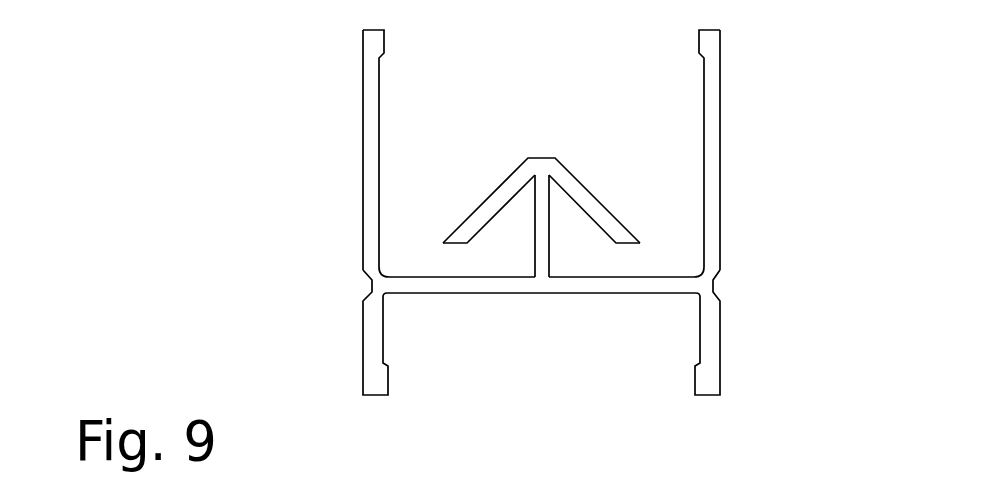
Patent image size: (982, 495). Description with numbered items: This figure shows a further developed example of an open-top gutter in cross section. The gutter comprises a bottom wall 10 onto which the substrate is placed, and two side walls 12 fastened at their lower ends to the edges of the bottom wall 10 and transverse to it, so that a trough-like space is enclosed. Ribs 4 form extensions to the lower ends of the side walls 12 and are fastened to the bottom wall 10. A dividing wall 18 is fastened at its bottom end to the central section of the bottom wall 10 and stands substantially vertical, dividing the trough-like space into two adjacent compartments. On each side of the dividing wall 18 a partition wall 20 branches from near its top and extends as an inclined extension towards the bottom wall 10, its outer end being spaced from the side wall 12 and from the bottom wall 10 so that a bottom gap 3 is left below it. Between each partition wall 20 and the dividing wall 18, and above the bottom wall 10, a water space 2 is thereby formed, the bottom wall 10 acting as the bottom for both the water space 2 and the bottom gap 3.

The water space 2 is at (497, 232).
The bottom gap 3 is at (450, 258).
The rib 4 is at (708, 347).
The bottom wall 10 is at (427, 285).
The side wall 12 is at (365, 113).
The dividing wall 18 is at (545, 222).
The partition wall 20 is at (500, 193).